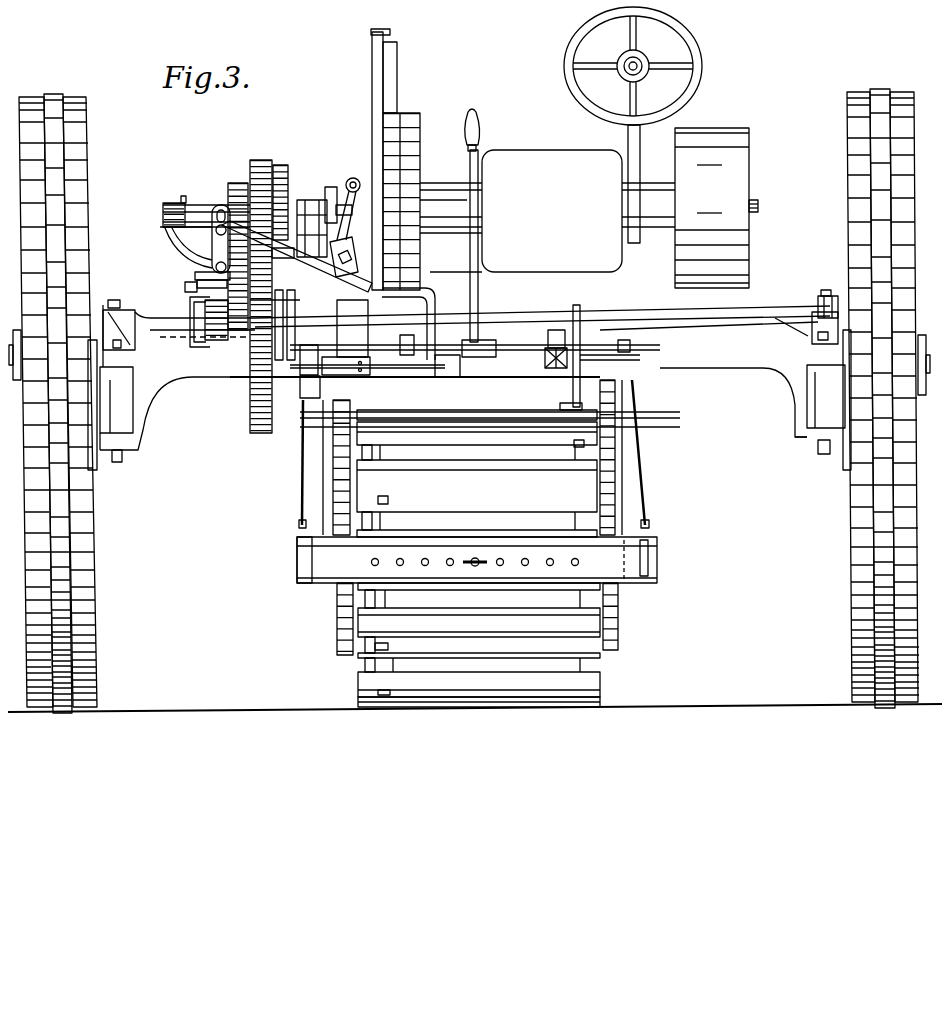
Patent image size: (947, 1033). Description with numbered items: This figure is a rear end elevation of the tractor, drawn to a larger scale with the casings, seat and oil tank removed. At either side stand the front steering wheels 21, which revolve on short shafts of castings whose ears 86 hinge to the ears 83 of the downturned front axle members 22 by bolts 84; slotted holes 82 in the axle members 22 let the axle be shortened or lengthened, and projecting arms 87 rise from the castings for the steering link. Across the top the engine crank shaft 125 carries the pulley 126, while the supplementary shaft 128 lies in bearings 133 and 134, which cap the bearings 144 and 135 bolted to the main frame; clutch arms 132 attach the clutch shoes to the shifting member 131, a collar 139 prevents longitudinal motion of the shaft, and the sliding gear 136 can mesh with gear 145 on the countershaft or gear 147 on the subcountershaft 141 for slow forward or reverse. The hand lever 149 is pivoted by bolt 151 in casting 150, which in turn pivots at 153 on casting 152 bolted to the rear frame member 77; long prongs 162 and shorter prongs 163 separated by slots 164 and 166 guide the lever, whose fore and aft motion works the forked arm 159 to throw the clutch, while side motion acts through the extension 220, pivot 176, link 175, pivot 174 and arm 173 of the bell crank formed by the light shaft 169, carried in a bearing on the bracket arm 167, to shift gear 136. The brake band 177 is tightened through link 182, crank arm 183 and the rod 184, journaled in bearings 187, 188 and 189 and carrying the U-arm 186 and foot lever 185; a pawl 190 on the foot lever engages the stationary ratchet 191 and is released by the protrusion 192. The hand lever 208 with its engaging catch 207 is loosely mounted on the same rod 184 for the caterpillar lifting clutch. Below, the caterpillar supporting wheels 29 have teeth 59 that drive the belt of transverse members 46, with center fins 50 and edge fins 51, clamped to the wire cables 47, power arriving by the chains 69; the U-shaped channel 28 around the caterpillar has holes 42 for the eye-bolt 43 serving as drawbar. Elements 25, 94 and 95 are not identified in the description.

The front wheel 21 is at (92, 618).
The front axle member 22 is at (208, 375).
The suspension rod 25 is at (303, 478).
The U-shaped channel 28 is at (340, 573).
The supporting wheel 29 is at (388, 665).
The holes 42 is at (448, 558).
The eye-bolt 43 is at (478, 558).
The transverse member 46 is at (586, 620).
The wire cable 47 is at (600, 664).
The fin 50 is at (494, 612).
The shorter fin 51 is at (420, 608).
The teeth 59 is at (375, 647).
The chain 69 is at (340, 482).
The transverse frame member 77 is at (642, 358).
The slotted hole 82 is at (640, 332).
The ear 83 is at (121, 365).
The bolt 84 is at (118, 462).
The ear 86 is at (127, 428).
The projecting arm 87 is at (118, 330).
The steering wheel 94 is at (700, 60).
The steering shaft 95 is at (626, 133).
The engine crank shaft 125 is at (759, 206).
The pulley 126 is at (742, 164).
The supplementary shaft 128 is at (196, 210).
The shifting member 131 is at (332, 187).
The clutch arm 132 is at (374, 150).
The bearing 133 is at (312, 200).
The bearing 134 is at (190, 264).
The bearing 135 is at (190, 313).
The gear 136 is at (238, 183).
The collar 139 is at (186, 205).
The subcountershaft 141 is at (185, 287).
The bearing 144 is at (322, 266).
The gear 145 is at (262, 160).
The gear 147 is at (215, 320).
The hand lever 149 is at (388, 80).
The casting 150 is at (415, 368).
The bolt 151 is at (346, 366).
The casting 152 is at (416, 343).
The pivot 153 is at (382, 380).
The bell crank arm 159 is at (345, 185).
The long prong 162 is at (318, 200).
The shorter prong 163 is at (398, 215).
The slot 164 is at (418, 210).
The slot 166 is at (350, 262).
The bracket arm 167 is at (220, 292).
The light shaft 169 is at (205, 276).
The bell crank arm 173 is at (212, 262).
The pivot 174 is at (175, 236).
The link 175 is at (283, 258).
The pivot 176 is at (360, 268).
The brake band 177 is at (281, 165).
The link 182 is at (280, 320).
The crank arm 183 is at (262, 355).
The shaft 184 is at (460, 368).
The foot lever 185 is at (545, 359).
The U-arm 186 is at (436, 310).
The bearing 187 is at (306, 360).
The bearing 188 is at (630, 345).
The bearing 189 is at (562, 330).
The pawl 190 is at (624, 395).
The ratchet 191 is at (574, 330).
The protrusion 192 is at (562, 405).
The engaging catch 207 is at (479, 291).
The hand lever 208 is at (478, 197).
The extension 220 is at (353, 328).